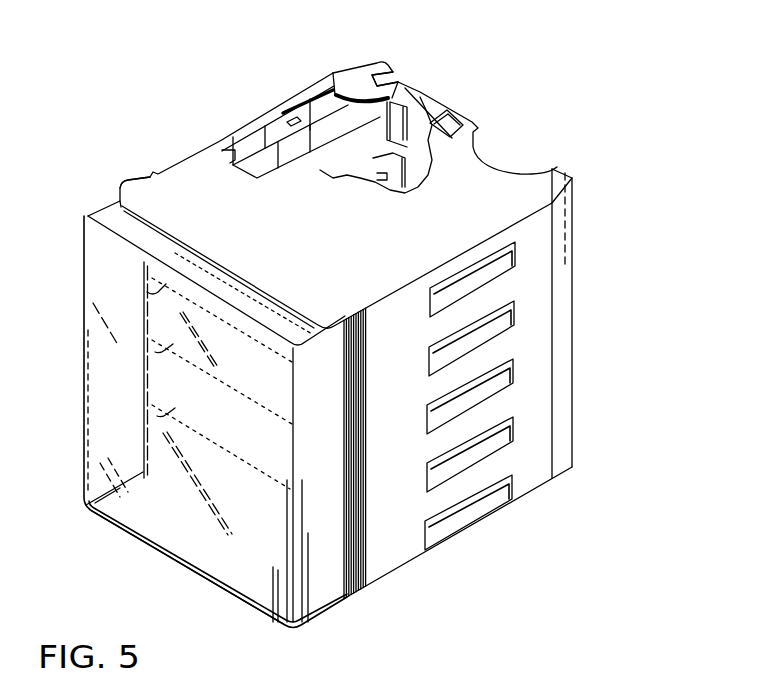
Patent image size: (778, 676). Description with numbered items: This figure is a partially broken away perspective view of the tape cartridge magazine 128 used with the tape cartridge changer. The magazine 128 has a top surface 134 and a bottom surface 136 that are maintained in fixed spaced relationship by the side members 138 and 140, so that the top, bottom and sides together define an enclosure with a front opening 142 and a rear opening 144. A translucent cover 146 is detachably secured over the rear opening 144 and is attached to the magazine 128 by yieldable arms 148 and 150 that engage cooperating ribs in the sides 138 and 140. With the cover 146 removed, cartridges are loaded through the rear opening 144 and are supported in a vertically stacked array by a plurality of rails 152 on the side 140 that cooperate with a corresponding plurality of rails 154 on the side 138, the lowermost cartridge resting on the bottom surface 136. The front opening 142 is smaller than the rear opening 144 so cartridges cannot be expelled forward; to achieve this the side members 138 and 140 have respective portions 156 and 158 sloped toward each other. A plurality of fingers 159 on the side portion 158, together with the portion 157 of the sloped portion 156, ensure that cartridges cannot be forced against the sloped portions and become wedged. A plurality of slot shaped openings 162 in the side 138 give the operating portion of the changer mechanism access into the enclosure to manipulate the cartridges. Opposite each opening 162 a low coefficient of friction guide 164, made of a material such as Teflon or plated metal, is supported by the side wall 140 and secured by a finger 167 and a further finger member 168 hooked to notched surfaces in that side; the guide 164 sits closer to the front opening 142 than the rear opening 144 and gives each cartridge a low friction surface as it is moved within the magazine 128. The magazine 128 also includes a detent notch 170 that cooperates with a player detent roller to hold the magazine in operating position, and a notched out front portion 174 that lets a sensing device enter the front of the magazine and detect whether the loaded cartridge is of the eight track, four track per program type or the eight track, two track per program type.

The tape cartridge magazine 128 is at (399, 564).
The top surface 134 is at (165, 172).
The bottom surface 136 is at (84, 482).
The side member 138 is at (530, 485).
The side member 140 is at (185, 168).
The front opening 142 is at (520, 146).
The rear opening 144 is at (153, 564).
The translucent cover 146 is at (246, 587).
The yieldable arm 148 is at (130, 180).
The yieldable arm 150 is at (353, 598).
The rails 152 is at (147, 290).
The rails 154 is at (443, 301).
The sloped portion 156 is at (560, 317).
The portion of sloped portion 157 is at (580, 173).
The sloped portion 158 is at (363, 64).
The fingers 159 is at (398, 185).
The slot shaped openings 162 is at (490, 279).
The low coefficient of friction guide 164 is at (304, 107).
The finger 167 is at (291, 118).
The finger member 168 is at (216, 147).
The detent notch 170 is at (458, 111).
The notched out front portion 174 is at (392, 72).